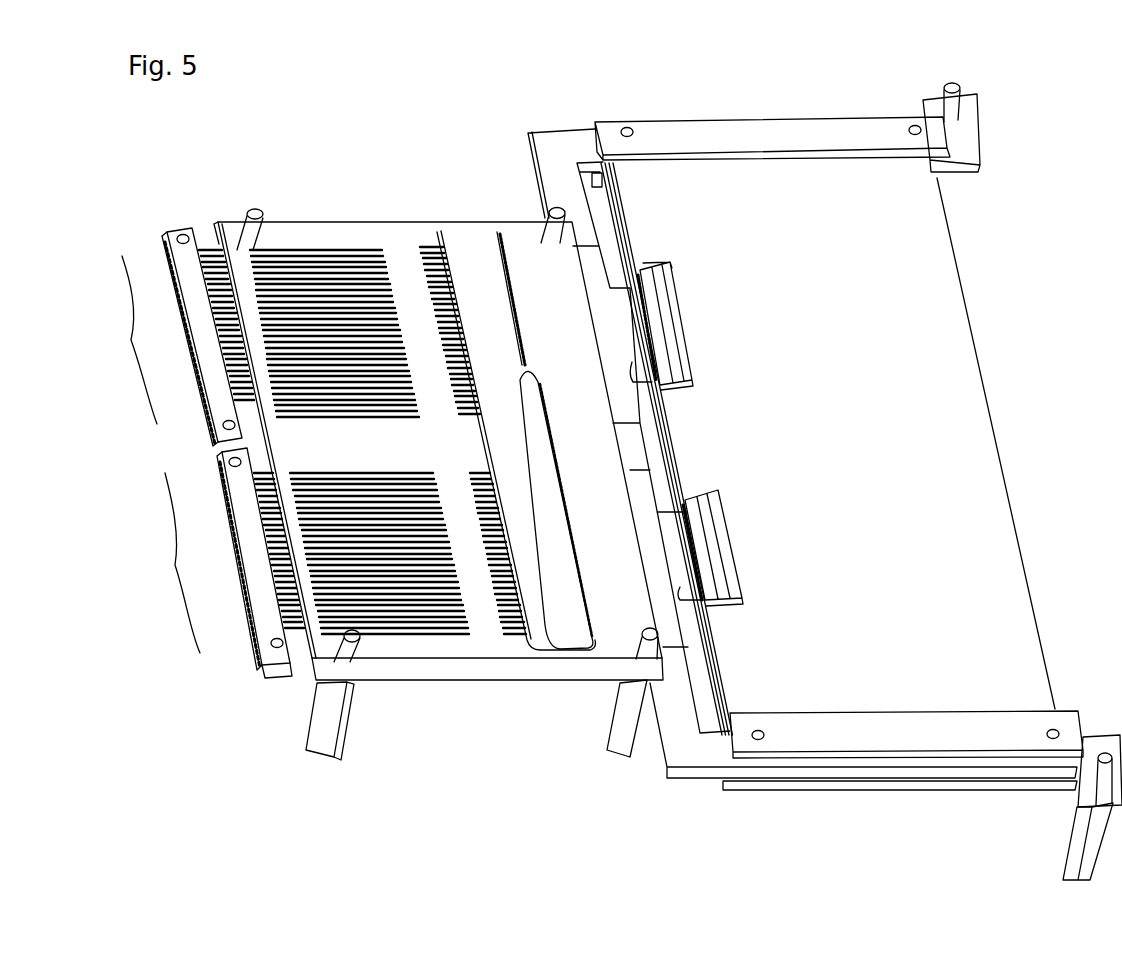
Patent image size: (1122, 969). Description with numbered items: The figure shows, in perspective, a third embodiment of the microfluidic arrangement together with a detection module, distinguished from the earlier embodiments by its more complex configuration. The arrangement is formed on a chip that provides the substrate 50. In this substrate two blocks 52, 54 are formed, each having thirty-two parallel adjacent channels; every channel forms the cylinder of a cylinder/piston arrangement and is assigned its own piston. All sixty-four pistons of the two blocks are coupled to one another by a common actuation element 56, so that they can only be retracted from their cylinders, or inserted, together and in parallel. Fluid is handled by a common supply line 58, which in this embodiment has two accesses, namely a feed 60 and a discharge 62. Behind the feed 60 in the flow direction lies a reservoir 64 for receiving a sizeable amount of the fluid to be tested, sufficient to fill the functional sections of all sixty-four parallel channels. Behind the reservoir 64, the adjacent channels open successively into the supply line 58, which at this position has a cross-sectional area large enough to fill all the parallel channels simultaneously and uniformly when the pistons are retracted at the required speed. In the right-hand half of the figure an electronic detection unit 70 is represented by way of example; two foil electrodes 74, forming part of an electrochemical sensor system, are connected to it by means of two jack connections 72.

The substrate 50 is at (347, 227).
The block 52 is at (164, 337).
The block 54 is at (209, 563).
The common actuation element 56 is at (273, 668).
The common supply line 58 is at (500, 224).
The feed 60 is at (497, 228).
The discharge 62 is at (438, 228).
The reservoir 64 is at (560, 500).
The electronic detection unit 70 is at (975, 333).
The jack connection 72 is at (680, 310).
The foil electrode 74 is at (636, 383).